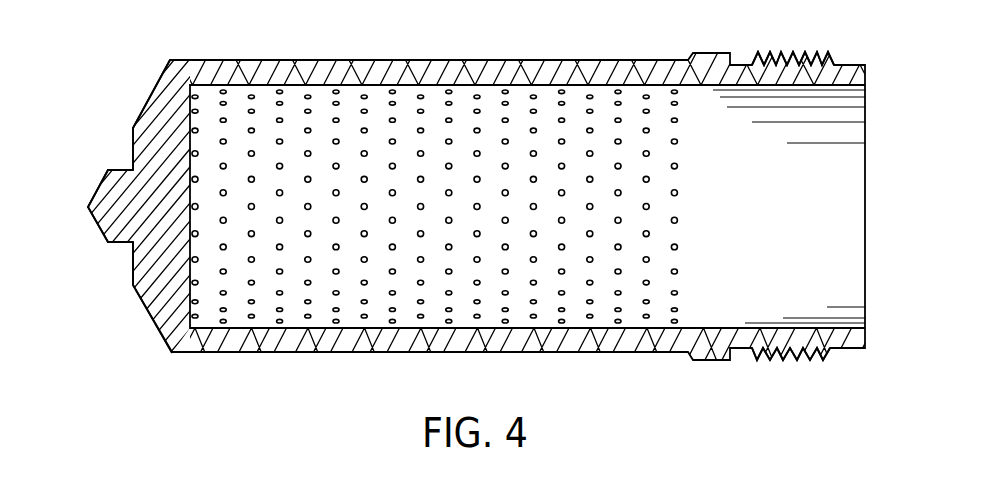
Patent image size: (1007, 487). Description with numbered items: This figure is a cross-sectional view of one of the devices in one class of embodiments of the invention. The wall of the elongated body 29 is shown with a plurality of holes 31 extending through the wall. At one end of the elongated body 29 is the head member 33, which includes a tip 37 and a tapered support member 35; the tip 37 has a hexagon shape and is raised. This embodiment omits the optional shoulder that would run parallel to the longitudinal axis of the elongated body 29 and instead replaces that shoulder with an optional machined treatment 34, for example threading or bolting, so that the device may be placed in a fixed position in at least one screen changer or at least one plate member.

The elongated body 29 is at (563, 60).
The holes 31 is at (392, 118).
The head member 33 is at (133, 128).
The machined treatment 34 is at (772, 352).
The tapered support member 35 is at (128, 245).
The tip 37 is at (103, 232).